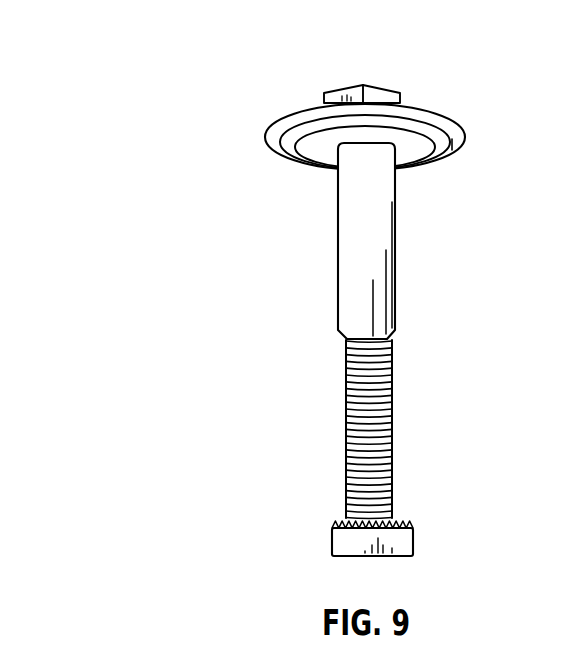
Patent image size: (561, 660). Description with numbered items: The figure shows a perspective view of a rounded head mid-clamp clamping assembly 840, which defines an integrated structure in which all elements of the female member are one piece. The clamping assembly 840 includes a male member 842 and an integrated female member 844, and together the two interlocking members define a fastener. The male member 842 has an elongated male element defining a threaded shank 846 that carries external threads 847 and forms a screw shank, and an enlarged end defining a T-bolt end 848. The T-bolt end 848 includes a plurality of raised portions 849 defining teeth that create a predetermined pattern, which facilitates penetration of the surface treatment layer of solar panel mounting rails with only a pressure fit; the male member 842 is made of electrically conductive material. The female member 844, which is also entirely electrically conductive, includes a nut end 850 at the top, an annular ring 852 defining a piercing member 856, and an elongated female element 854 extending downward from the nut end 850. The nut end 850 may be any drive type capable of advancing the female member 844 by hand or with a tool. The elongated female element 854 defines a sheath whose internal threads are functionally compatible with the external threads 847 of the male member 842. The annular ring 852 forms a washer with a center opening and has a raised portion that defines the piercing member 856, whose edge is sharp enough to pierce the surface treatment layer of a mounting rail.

The rounded head mid-clamp clamping assembly 840 is at (127, 62).
The male member 842 is at (393, 412).
The female member 844 is at (388, 243).
The threaded shank 846 is at (389, 362).
The external threads 847 is at (348, 392).
The T-bolt end 848 is at (412, 538).
The raised portion 849 is at (408, 522).
The nut end 850 is at (369, 87).
The annular ring 852 is at (453, 146).
The elongated female element 854 is at (347, 265).
The piercing member 856 is at (282, 156).